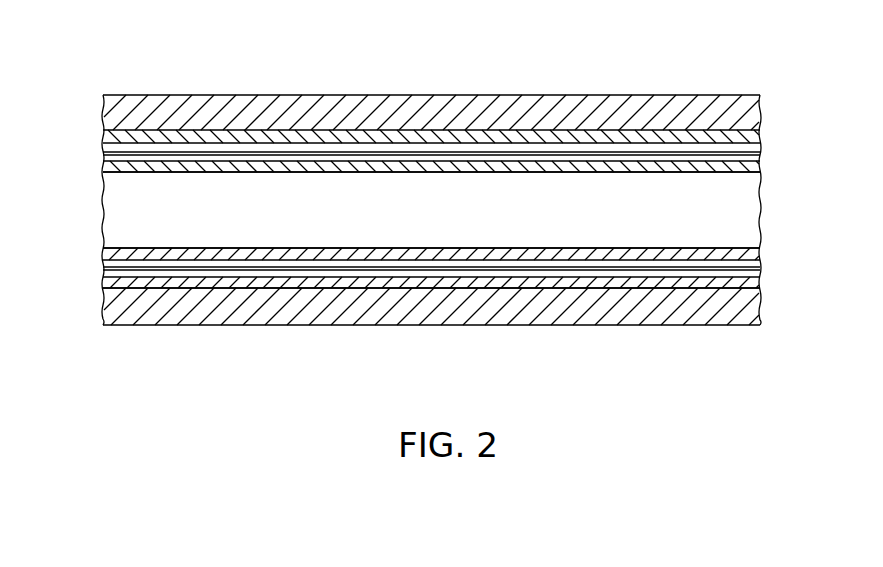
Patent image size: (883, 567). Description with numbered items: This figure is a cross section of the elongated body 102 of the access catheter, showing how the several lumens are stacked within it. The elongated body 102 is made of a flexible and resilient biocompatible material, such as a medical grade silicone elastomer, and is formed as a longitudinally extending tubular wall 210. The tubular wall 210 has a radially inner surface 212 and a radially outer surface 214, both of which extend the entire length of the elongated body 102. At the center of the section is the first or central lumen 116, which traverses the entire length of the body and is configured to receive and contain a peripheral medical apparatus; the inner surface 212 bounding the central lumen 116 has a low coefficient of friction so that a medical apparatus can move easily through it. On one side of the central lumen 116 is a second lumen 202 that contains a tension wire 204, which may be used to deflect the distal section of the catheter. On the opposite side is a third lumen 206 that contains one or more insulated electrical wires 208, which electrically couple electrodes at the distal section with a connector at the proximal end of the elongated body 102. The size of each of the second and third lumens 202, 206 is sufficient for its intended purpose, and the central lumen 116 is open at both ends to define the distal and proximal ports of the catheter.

The elongated body 102 is at (521, 95).
The second lumen 202 is at (761, 147).
The radially outer surface 214 is at (630, 157).
The tension wire 204 is at (305, 152).
The radially inner surface 212 is at (415, 173).
The central lumen 116 is at (762, 214).
The tubular wall 210 is at (656, 173).
The insulated electrical wires 208 is at (222, 268).
The third lumen 206 is at (758, 278).